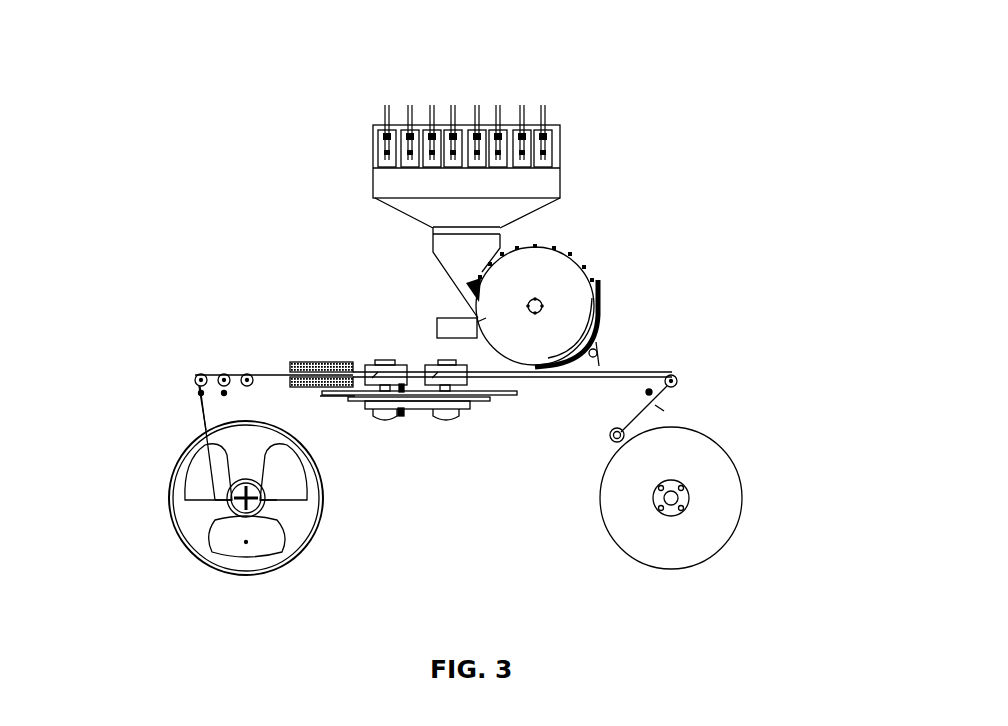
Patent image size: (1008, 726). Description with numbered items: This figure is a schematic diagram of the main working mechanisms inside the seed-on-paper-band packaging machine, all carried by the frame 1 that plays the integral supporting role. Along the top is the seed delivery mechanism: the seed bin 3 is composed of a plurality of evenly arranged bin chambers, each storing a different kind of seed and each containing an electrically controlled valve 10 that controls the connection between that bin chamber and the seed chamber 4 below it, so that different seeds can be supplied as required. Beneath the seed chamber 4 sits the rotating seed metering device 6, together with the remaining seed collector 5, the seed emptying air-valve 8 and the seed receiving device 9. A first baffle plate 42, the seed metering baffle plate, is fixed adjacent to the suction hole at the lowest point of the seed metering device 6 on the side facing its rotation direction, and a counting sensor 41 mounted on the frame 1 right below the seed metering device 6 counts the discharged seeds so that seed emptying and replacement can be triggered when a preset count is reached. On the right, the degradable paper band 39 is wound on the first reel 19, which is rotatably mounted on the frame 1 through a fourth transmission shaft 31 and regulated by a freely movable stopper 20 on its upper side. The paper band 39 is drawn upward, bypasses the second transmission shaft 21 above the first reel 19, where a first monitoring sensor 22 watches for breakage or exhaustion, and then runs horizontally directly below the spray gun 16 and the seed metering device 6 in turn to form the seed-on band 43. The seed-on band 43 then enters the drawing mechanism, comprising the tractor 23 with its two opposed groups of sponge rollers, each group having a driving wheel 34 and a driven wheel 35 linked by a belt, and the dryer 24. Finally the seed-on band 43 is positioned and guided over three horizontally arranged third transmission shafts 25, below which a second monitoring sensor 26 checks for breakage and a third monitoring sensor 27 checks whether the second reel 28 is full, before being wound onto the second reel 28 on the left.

The frame 1 is at (612, 376).
The seed bin 3 is at (500, 121).
The seed chamber 4 is at (442, 238).
The remaining seed collector 5 is at (448, 328).
The seed metering device 6 is at (577, 262).
The seed emptying air-valve 8 is at (542, 246).
The seed receiving device 9 is at (545, 363).
The electrically controlled valve 10 is at (410, 120).
The spray gun 16 is at (645, 376).
The first reel 19 is at (693, 551).
The stopper 20 is at (612, 445).
The second transmission shaft 21 is at (673, 380).
The first monitoring sensor 22 is at (677, 380).
The tractor 23 is at (437, 372).
The dryer 24 is at (300, 365).
The third transmission shaft 25 is at (247, 378).
The second monitoring sensor 26 is at (224, 380).
The third monitoring sensor 27 is at (201, 380).
The second reel 28 is at (205, 515).
The fourth transmission shaft 31 is at (682, 490).
The driving wheel 34 is at (460, 415).
The driven wheel 35 is at (397, 417).
The paper band 39 is at (660, 408).
The counting sensor 41 is at (556, 360).
The first baffle plate 42 is at (575, 310).
The seed-on band 43 is at (200, 422).